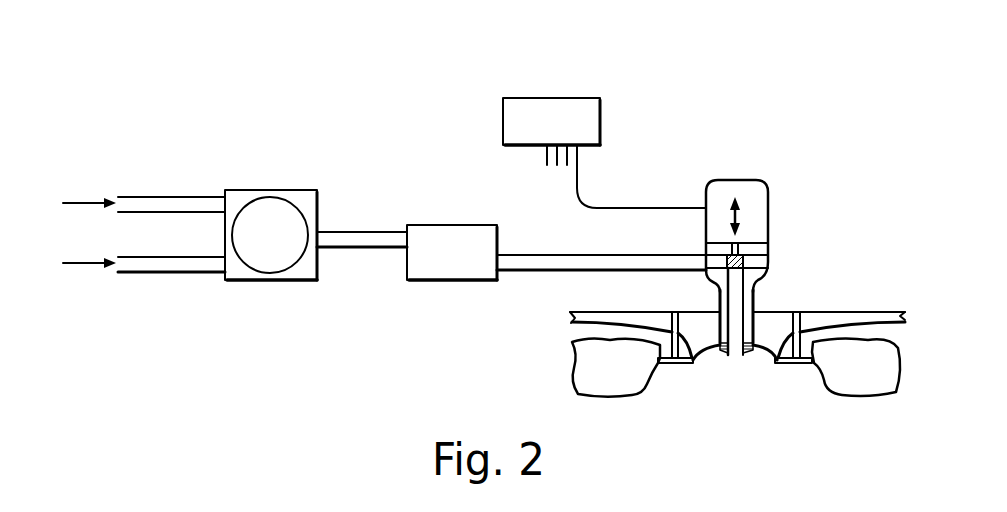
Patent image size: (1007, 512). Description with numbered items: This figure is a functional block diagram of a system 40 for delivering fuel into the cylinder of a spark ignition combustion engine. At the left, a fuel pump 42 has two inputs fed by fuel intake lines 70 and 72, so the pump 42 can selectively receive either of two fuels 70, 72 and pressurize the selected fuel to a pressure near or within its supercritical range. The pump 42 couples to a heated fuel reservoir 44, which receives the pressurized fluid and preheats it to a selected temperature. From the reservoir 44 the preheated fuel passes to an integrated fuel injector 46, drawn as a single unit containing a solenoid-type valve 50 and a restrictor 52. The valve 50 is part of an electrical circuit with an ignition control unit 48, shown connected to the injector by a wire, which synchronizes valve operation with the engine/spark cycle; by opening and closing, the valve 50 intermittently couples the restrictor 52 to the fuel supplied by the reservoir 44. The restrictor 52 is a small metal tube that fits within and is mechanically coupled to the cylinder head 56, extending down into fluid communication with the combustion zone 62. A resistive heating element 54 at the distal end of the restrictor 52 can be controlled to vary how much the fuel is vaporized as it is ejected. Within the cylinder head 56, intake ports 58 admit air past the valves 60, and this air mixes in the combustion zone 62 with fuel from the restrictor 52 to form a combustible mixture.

The system 40 is at (645, 42).
The fuel pump 42 is at (268, 170).
The heated fuel reservoir 44 is at (445, 223).
The integrated fuel injector 46 is at (768, 200).
The ignition control unit 48 is at (543, 98).
The solenoid-type valve 50 is at (718, 192).
The restrictor 52 is at (745, 289).
The resistive heating element 54 is at (727, 357).
The cylinder head 56 is at (817, 312).
The intake ports 58 is at (625, 336).
The valves 60 is at (790, 368).
The combustion zone 62 is at (742, 392).
The fuel intake line 70 is at (88, 200).
The fuel intake line 72 is at (89, 265).